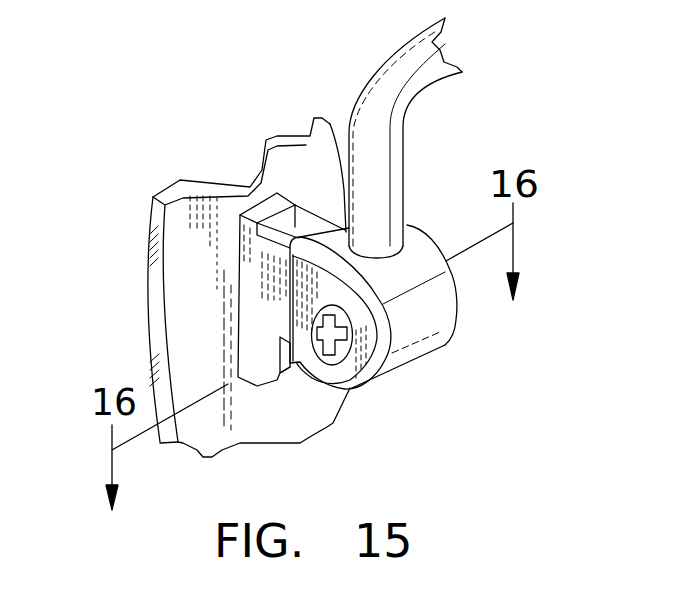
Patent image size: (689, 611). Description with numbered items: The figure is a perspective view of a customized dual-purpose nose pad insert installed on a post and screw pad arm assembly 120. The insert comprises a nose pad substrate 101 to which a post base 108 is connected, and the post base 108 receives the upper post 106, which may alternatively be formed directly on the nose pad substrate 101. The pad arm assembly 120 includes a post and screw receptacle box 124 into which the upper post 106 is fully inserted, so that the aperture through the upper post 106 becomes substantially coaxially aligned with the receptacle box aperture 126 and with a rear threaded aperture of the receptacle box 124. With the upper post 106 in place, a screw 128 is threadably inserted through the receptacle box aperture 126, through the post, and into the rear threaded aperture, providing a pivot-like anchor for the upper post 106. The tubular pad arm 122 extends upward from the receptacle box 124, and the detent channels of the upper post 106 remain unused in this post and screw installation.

The nose pad substrate 101 is at (192, 266).
The upper post 106 is at (302, 235).
The post base 108 is at (267, 208).
The post and screw pad arm assembly 120 is at (428, 160).
The tube 122 is at (402, 90).
The receptacle box 124 is at (445, 310).
The receptacle box aperture 126 is at (355, 346).
The screw 128 is at (317, 381).